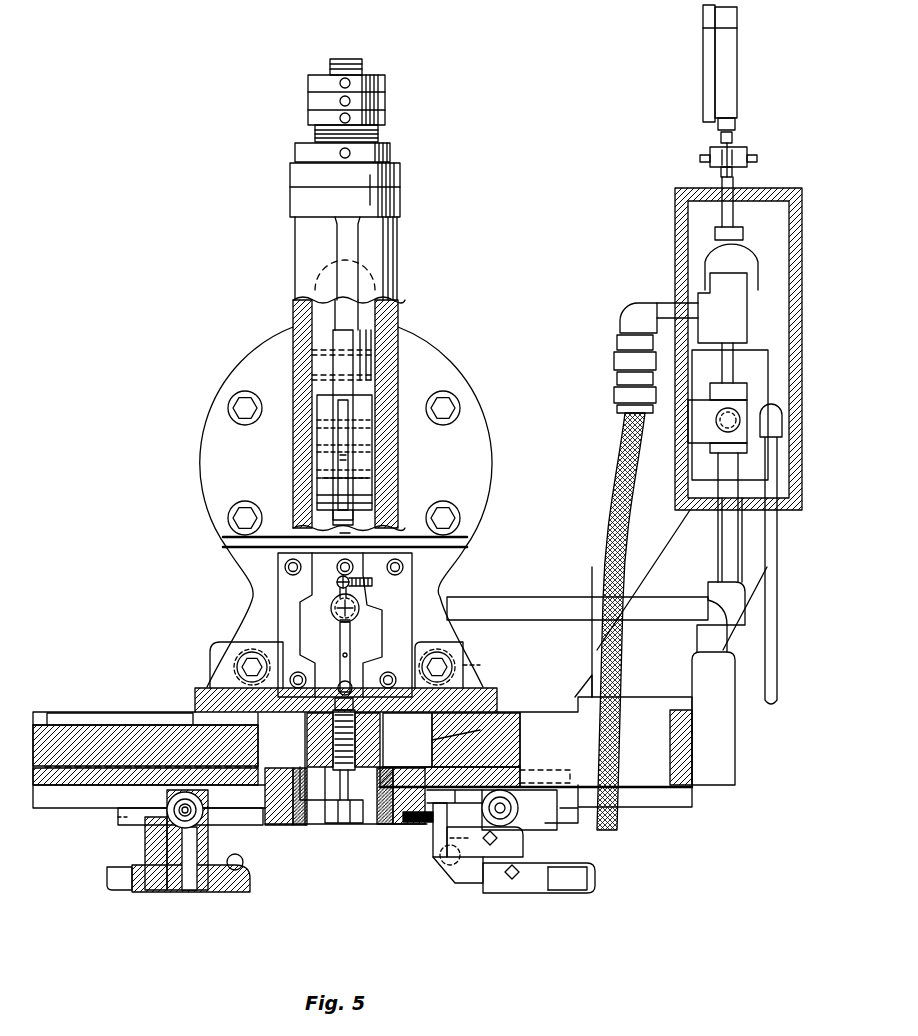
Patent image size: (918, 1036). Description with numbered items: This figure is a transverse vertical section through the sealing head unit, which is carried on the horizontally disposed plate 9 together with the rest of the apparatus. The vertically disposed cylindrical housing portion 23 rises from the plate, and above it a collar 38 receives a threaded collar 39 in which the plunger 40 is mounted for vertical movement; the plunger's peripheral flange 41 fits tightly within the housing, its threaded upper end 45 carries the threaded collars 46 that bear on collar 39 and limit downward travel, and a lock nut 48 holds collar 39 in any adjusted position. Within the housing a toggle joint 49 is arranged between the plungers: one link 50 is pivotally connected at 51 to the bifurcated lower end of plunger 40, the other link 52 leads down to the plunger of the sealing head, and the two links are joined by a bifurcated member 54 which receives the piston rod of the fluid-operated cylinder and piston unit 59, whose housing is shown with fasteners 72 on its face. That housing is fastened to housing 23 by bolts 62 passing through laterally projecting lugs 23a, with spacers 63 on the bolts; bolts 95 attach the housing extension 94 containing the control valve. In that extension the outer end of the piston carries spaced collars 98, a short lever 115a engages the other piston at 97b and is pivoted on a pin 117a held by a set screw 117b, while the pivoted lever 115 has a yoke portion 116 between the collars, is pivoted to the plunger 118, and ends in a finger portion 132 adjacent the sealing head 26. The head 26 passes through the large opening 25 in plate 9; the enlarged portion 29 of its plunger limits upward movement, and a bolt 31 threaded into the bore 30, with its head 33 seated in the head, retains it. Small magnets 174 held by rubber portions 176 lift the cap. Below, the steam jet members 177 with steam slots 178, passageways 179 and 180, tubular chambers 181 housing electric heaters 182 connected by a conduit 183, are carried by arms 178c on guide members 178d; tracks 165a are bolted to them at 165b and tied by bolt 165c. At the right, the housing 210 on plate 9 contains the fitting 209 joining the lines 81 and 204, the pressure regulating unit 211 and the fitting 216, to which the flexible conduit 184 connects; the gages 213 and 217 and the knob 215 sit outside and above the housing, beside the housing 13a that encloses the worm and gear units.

The threaded upper end of plunger 45 is at (362, 63).
The threaded collars 46 is at (385, 81).
The collar 39 is at (378, 132).
The lock nut 48 is at (390, 152).
The collar 38 is at (400, 176).
The cylindrical housing portion 23 is at (397, 232).
The plunger 40 is at (350, 312).
The peripheral flange 41 is at (378, 342).
The pivotal connection 51 is at (300, 361).
The toggle link 50 is at (345, 362).
The fluid-operated cylinder and piston unit 59 is at (490, 350).
The cover bolts 72 is at (440, 385).
The bifurcated member 54 is at (325, 453).
The toggle joint 49 is at (335, 472).
The toggle link 52 is at (350, 505).
The engagement point of lever with piston 97b is at (345, 555).
The bolts 95 is at (402, 565).
The pin 117a is at (337, 581).
The set screw 117b is at (373, 582).
The housing extension 94 is at (278, 603).
The short lever 115a is at (340, 597).
The spaced collars 98 is at (359, 606).
The yoke portion 116 is at (338, 620).
The pivoted lever 115 is at (350, 636).
The plunger 118 is at (352, 687).
The bolts 62 is at (440, 665).
The laterally projecting lugs 23a is at (447, 664).
The spacers 63 is at (460, 672).
The plate 9 is at (97, 738).
The bolt 31 is at (307, 731).
The cylindrical portion of rubber 176 is at (312, 770).
The enlarged portion 29 is at (376, 727).
The vertically disposed bore 30 is at (432, 740).
The large opening 25 is at (500, 728).
The conduit 183 is at (506, 800).
The tubular chamber 181 is at (167, 806).
The hollow tubular electric heater 182 is at (203, 808).
The guide members 178d is at (118, 817).
The arms 178c is at (107, 878).
The steam slots 178 is at (243, 865).
The longitudinally extending passageway 179 is at (240, 890).
The passageway 180 is at (185, 890).
The steam jet members 177 is at (455, 887).
The sealing head 26 is at (282, 826).
The small magnets 174 is at (303, 826).
The finger portion 132 is at (343, 825).
The bolt head 33 is at (352, 826).
The bolt 165c is at (433, 838).
The tracks 165a is at (433, 853).
The bolts 165b is at (520, 877).
The housing 13a is at (718, 735).
The steam line 81 is at (552, 618).
The flexible conduit 184 is at (625, 462).
The steam line 204 is at (735, 483).
The fitting 209 is at (740, 395).
The fitting 216 is at (725, 305).
The steam pressure regulating unit 211 is at (742, 238).
The housing 210 is at (705, 191).
The rotatable knob 215 is at (710, 157).
The steam pressure gage 213 is at (705, 14).
The pressure gage 217 is at (715, 55).